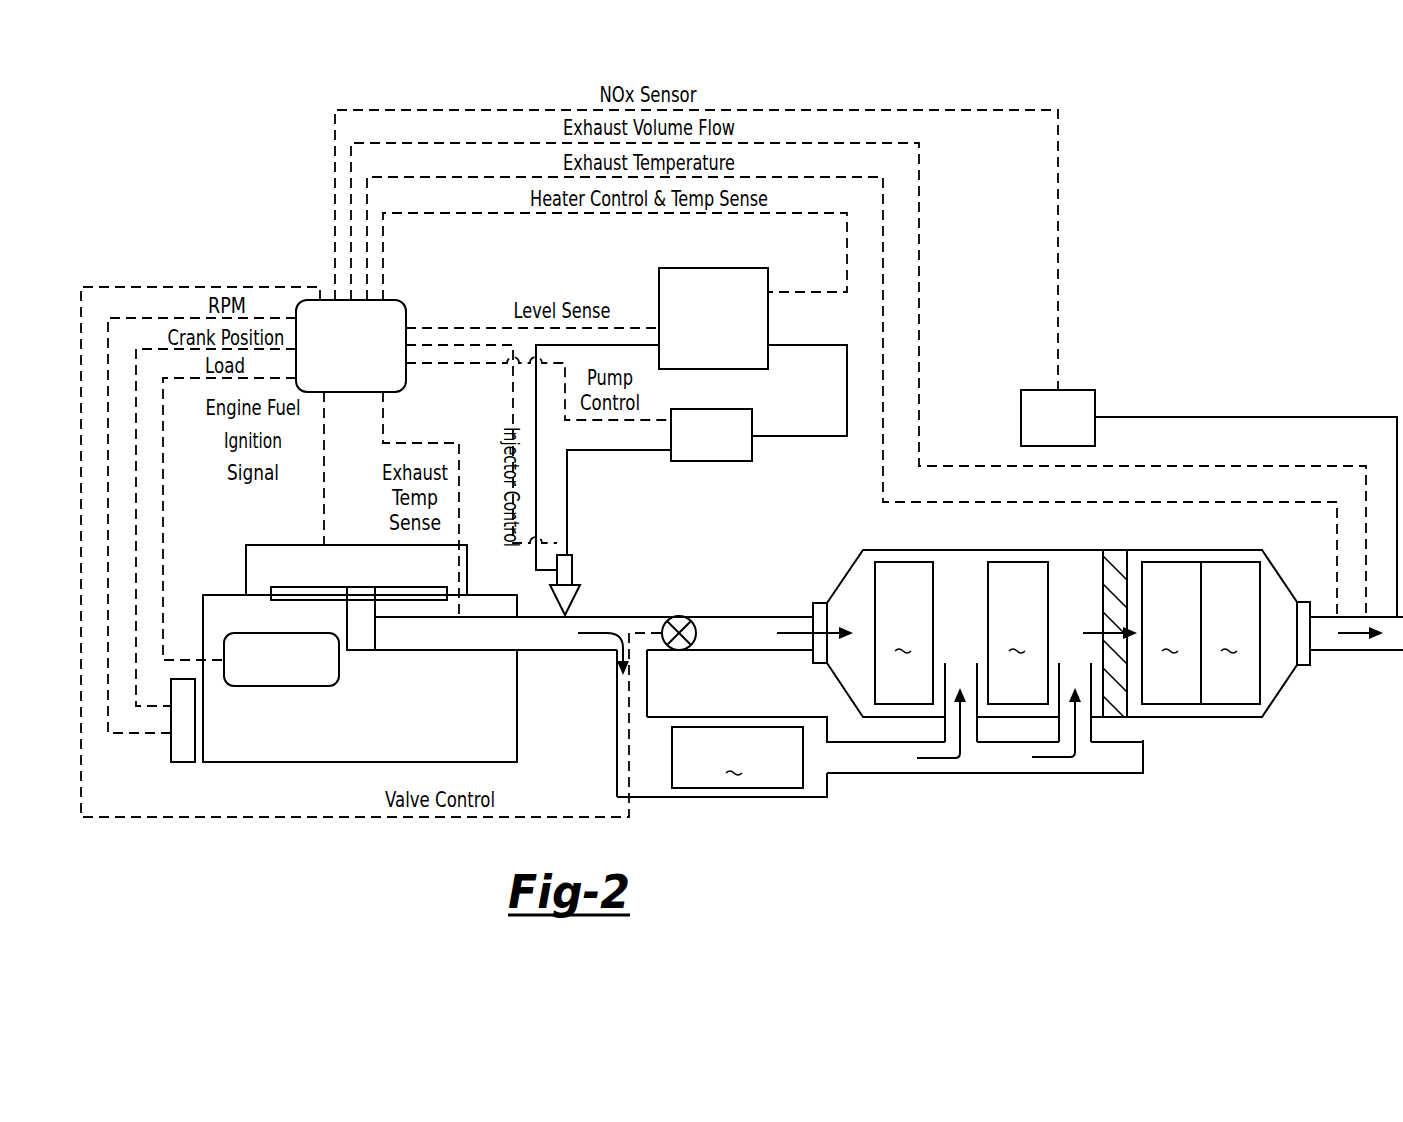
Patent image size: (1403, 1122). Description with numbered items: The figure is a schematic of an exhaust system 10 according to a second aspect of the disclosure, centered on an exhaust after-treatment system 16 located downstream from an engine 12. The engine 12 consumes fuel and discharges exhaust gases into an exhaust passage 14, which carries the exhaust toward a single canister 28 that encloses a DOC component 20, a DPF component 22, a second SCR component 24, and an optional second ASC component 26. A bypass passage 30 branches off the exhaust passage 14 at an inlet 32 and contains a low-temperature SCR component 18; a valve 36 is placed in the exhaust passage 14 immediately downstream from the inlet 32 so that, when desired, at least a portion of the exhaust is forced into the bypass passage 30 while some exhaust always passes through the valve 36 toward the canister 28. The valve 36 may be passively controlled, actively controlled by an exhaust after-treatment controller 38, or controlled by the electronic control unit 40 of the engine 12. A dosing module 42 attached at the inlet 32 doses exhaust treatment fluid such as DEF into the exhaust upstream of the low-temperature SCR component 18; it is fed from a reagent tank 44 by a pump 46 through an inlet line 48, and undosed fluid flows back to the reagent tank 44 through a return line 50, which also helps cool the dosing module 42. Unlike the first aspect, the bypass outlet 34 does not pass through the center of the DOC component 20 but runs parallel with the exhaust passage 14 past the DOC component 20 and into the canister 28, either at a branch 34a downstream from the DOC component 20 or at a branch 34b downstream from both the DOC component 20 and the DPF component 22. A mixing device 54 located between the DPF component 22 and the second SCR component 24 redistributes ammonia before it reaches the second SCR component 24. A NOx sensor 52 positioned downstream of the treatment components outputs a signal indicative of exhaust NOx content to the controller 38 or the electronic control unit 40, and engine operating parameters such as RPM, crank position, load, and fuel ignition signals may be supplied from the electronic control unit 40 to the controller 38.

The exhaust system 10 is at (247, 146).
The engine 12 is at (276, 762).
The exhaust passage 14 is at (540, 650).
The exhaust after-treatment system 16 is at (1138, 818).
The low-temperature SCR component 18 is at (737, 757).
The DOC component 20 is at (904, 633).
The DPF component 22 is at (1018, 633).
The second SCR component 24 is at (1171, 633).
The second ASC component 26 is at (1230, 633).
The canister 28 is at (1235, 717).
The bypass passage 30 is at (792, 812).
The inlet 32 is at (604, 760).
The bypass outlet 34 is at (921, 773).
The branch 34a is at (977, 708).
The branch 34b is at (1093, 727).
The valve 36 is at (696, 627).
The exhaust after-treatment controller 38 is at (390, 300).
The electronic control unit 40 is at (293, 686).
The dosing module 42 is at (573, 570).
The reagent tank 44 is at (743, 268).
The pump 46 is at (711, 461).
The inlet line 48 is at (567, 478).
The return line 50 is at (630, 345).
The NOx sensor 52 is at (1078, 390).
The mixing device 54 is at (1107, 568).